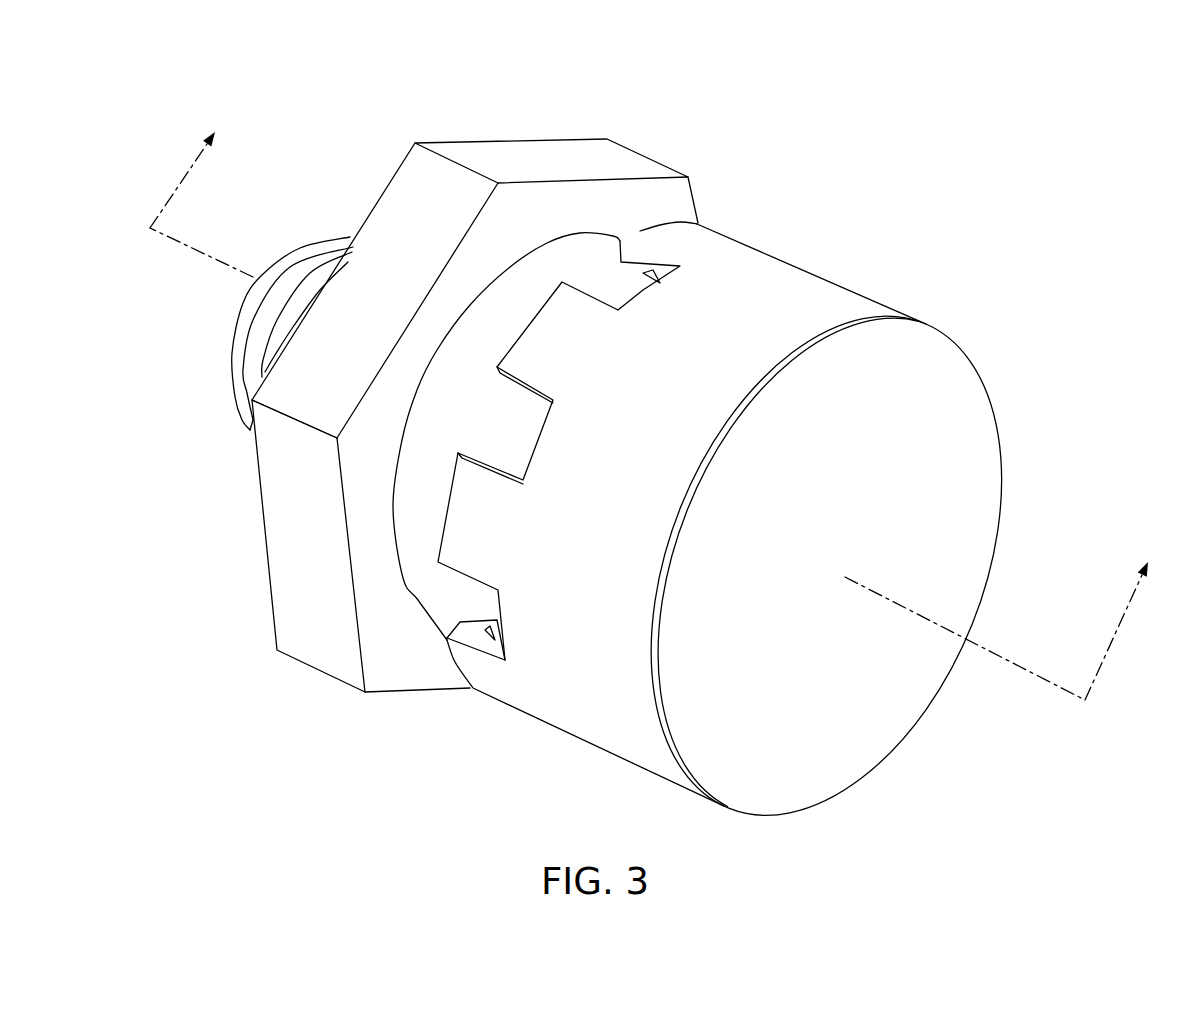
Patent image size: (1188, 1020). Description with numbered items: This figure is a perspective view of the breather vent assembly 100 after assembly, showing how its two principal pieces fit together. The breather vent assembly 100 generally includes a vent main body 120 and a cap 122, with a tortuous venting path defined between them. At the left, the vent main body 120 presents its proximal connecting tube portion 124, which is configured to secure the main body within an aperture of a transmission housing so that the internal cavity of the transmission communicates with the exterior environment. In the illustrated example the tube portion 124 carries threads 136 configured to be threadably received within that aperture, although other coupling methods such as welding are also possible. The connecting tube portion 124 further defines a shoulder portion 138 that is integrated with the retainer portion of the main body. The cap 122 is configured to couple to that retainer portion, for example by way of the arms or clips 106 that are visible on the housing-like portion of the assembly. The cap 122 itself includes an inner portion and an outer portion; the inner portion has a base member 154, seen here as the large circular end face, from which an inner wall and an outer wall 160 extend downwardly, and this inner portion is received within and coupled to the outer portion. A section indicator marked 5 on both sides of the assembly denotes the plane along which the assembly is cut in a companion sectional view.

The breather vent assembly 100 is at (866, 104).
The arms or clips 106 is at (687, 245).
The vent main body 120 is at (519, 118).
The cap 122 is at (961, 302).
The connecting tube portion 124 is at (232, 354).
The threads 136 is at (323, 214).
The shoulder portion 138 is at (320, 383).
The base member 154 is at (918, 470).
The outer wall 160 is at (792, 290).
The section line 5- 5 is at (655, 398).